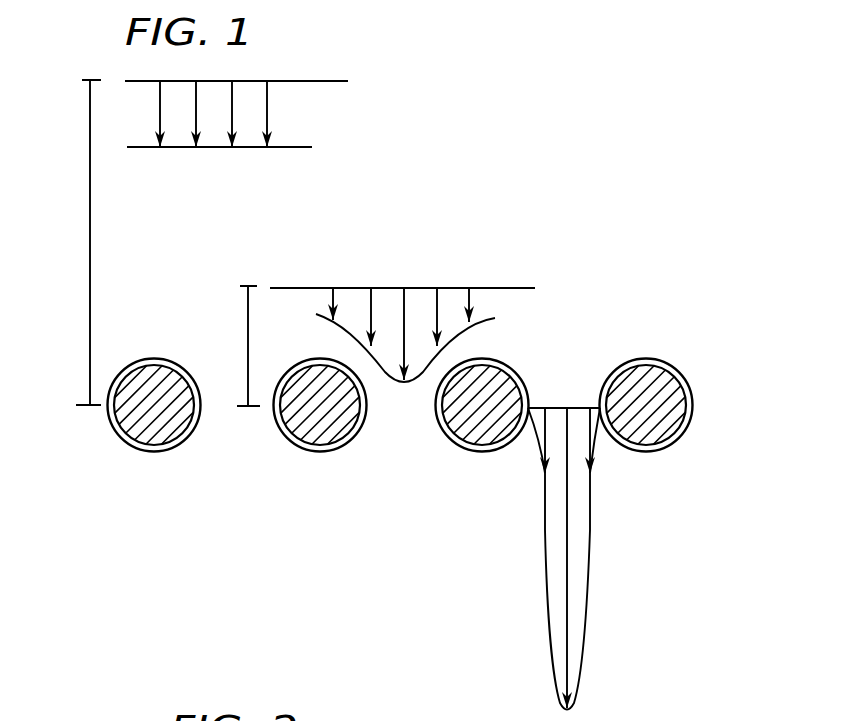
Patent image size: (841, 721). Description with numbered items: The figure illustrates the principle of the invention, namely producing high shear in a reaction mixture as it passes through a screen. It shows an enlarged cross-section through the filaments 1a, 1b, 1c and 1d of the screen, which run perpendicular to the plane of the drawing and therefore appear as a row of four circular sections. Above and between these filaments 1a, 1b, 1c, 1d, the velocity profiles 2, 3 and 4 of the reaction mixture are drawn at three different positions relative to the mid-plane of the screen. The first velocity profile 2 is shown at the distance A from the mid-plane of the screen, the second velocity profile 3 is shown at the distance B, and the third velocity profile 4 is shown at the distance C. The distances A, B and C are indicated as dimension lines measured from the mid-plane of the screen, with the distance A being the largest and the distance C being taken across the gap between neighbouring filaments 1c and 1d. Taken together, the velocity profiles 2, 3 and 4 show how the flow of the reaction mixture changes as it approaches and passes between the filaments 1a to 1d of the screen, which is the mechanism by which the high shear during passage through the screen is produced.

The filament 1a is at (173, 428).
The filament 1b is at (333, 430).
The filament 1c is at (477, 430).
The filament 1d is at (668, 430).
The velocity profile 2 is at (284, 114).
The velocity profile 3 is at (445, 298).
The velocity profile 4 is at (583, 499).
The distance A is at (90, 205).
The distance B is at (248, 316).
The distance C is at (555, 408).